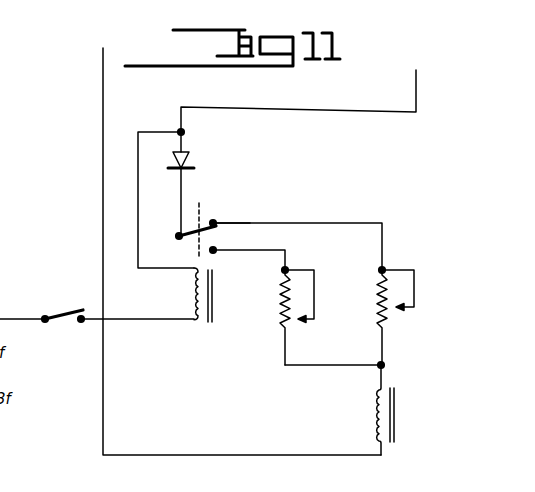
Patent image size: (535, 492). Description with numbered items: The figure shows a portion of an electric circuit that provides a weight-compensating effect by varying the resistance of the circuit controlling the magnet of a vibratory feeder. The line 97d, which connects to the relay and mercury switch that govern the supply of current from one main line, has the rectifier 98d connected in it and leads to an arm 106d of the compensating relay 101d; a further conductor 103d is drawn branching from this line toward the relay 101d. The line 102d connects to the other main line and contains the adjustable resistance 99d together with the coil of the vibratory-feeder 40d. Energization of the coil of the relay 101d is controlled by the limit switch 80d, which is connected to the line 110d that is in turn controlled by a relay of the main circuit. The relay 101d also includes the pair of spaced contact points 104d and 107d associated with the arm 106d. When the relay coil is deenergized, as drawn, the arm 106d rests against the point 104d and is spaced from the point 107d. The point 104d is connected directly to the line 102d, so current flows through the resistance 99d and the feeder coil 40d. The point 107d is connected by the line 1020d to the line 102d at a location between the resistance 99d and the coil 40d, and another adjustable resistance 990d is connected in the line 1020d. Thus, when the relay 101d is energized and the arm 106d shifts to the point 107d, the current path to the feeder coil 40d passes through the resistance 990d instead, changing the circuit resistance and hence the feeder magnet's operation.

The line 97d is at (387, 112).
The rectifier 98d is at (191, 166).
The conductor 103d is at (138, 196).
The line 102d is at (103, 245).
The arm 106d is at (199, 230).
The contact point 104d is at (213, 223).
The contact point 107d is at (213, 250).
The compensating relay 101d is at (214, 296).
The limit switch 80d is at (70, 310).
The line 110d is at (18, 320).
The adjustable resistance 990d is at (312, 282).
The adjustable resistance 99d is at (415, 290).
The line 1020d is at (340, 366).
The coil of the vibratory-feeder 40d is at (400, 413).